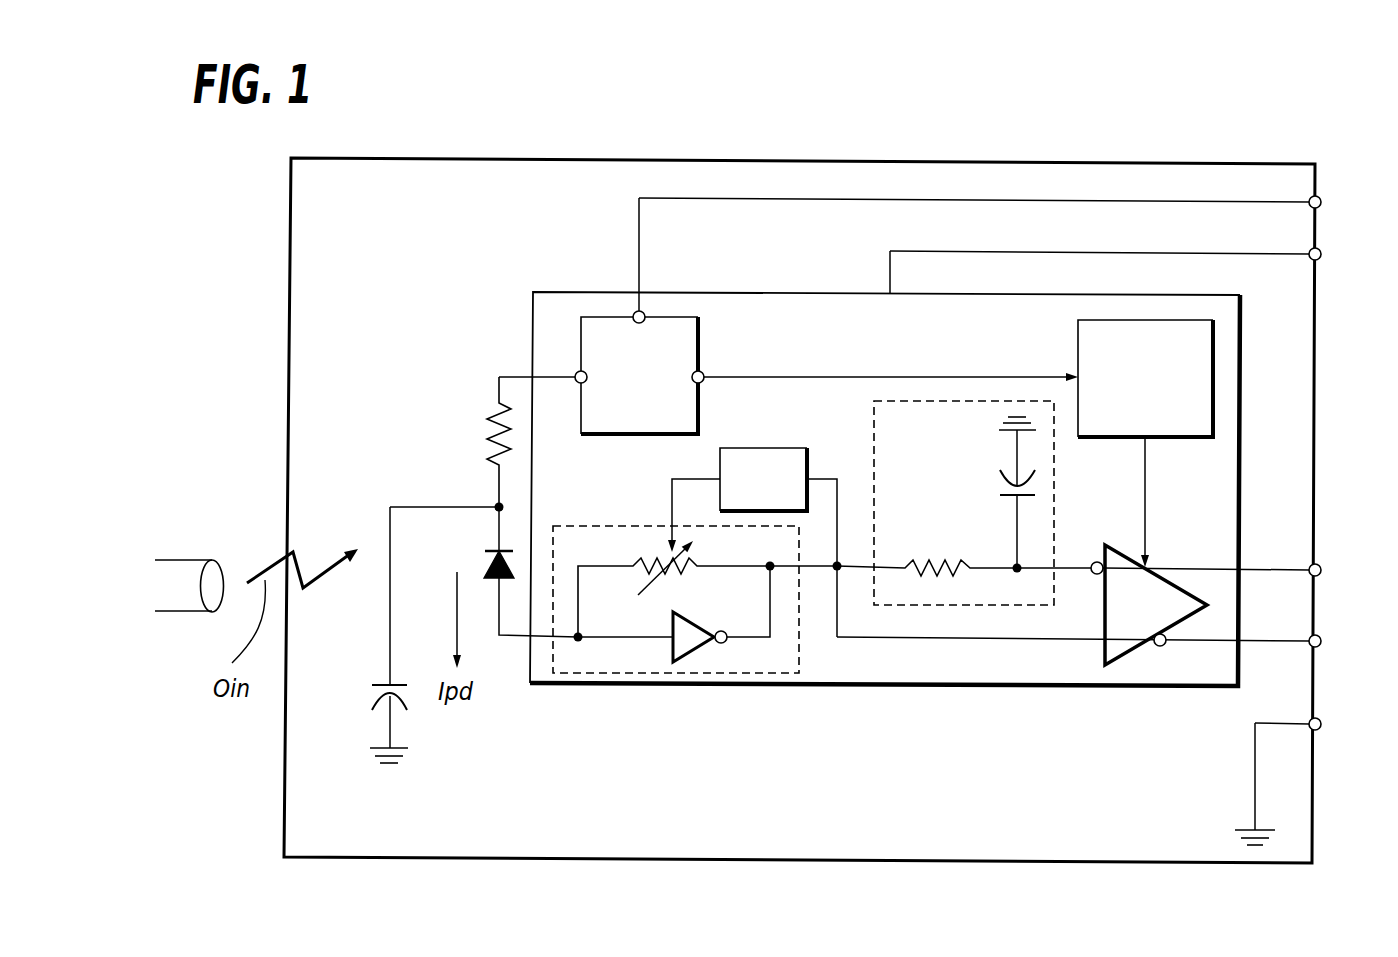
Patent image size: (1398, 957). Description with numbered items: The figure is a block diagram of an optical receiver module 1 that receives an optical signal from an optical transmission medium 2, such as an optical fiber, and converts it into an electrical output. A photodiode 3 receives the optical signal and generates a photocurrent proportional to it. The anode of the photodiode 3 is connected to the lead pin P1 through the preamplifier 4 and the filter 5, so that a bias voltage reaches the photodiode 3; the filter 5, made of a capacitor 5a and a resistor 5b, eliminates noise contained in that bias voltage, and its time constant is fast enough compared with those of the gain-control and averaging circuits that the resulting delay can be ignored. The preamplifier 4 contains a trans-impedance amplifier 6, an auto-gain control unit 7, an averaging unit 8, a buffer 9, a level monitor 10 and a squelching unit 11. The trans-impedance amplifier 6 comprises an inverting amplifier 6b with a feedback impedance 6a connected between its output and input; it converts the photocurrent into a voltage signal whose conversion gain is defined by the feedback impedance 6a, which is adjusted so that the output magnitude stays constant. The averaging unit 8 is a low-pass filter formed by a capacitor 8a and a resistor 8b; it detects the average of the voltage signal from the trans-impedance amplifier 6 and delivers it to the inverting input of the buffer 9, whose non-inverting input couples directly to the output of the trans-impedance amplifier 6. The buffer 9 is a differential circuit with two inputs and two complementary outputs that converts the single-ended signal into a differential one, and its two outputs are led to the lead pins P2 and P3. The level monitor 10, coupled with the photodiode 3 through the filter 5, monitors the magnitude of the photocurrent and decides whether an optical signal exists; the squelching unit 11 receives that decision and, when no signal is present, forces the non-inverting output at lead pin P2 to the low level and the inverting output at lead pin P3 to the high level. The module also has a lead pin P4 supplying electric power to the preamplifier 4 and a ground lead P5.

The optical receiver module 1 is at (1240, 158).
The optical transmission medium 2 is at (188, 560).
The photodiode 3 is at (483, 553).
The preamplifier 4 is at (1020, 688).
The filter 5 is at (454, 556).
The capacitor 5a is at (377, 683).
The resistor 5b is at (500, 400).
The trans-impedance amplifier 6 is at (697, 569).
The feedback impedance 6a is at (640, 560).
The inverting amplifier 6b is at (700, 622).
The auto-gain control unit 7 is at (788, 448).
The averaging unit 8 is at (972, 503).
The capacitor 8a is at (1007, 500).
The resistor 8b is at (922, 560).
The buffer 9 is at (1127, 653).
The level monitor 10 is at (700, 323).
The squelching unit 11 is at (1213, 345).
The lead pin P1 is at (1322, 202).
The lead pin P2 is at (1322, 570).
The lead pin P3 is at (1322, 641).
The lead pin P4 is at (1322, 254).
The ground lead P5 is at (1322, 724).